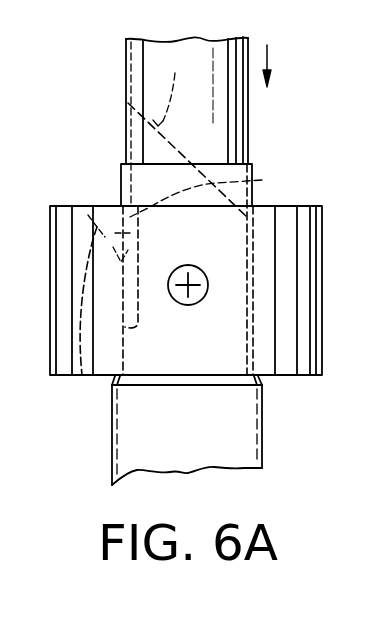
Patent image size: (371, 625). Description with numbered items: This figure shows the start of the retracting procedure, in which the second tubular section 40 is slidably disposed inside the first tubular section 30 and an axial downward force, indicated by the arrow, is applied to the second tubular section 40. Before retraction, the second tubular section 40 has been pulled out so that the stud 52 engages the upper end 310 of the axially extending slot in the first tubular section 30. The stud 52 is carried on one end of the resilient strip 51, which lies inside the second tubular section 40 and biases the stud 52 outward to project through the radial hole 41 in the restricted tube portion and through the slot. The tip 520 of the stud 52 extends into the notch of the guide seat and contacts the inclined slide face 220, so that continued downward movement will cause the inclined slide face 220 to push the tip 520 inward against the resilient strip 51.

The second tubular section 40 is at (126, 81).
The radial hole 41 is at (118, 227).
The resilient strip 51 is at (183, 86).
The stud 52 is at (123, 233).
The tip of the stud 520 is at (97, 227).
The upper end of the axially extending slot 310 is at (247, 180).
The inclined slide face 220 is at (82, 375).
The first tubular section 30 is at (112, 466).